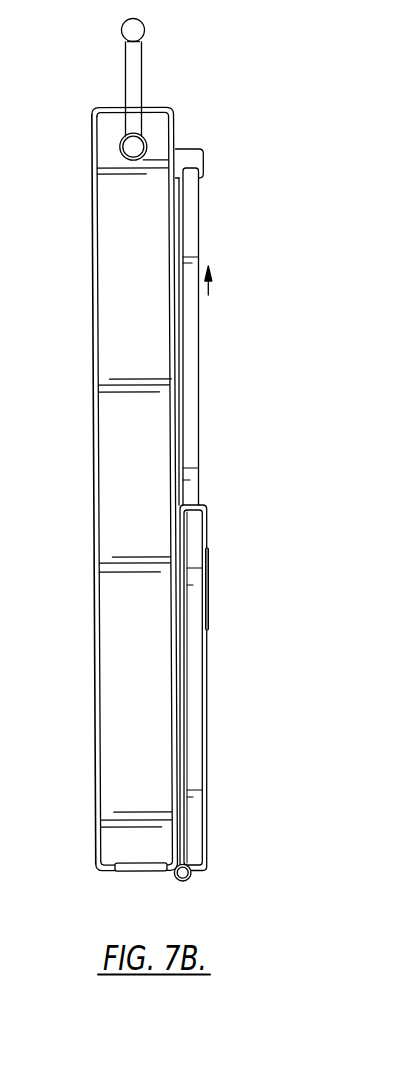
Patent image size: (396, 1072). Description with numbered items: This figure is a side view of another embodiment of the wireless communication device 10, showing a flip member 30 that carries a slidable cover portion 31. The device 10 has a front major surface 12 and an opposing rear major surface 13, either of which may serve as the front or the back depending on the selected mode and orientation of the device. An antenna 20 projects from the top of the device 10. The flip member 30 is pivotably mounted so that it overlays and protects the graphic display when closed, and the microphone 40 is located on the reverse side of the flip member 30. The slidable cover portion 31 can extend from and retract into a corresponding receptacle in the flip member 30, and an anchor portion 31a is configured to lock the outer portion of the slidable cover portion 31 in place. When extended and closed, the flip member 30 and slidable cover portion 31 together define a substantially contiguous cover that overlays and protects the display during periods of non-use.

The wireless communication device 10 is at (190, 84).
The front major surface 12 is at (177, 128).
The rear major surface 13 is at (92, 242).
The antenna 20 is at (132, 98).
The flip member 30 is at (197, 762).
The slidable cover portion 31 is at (193, 358).
The anchor portion 31a is at (200, 160).
The microphone 40 is at (207, 592).